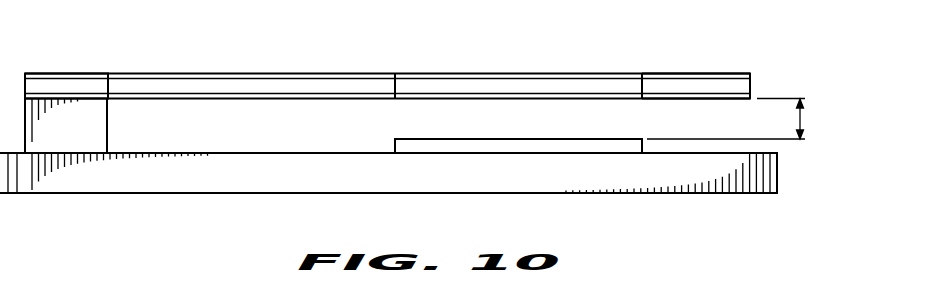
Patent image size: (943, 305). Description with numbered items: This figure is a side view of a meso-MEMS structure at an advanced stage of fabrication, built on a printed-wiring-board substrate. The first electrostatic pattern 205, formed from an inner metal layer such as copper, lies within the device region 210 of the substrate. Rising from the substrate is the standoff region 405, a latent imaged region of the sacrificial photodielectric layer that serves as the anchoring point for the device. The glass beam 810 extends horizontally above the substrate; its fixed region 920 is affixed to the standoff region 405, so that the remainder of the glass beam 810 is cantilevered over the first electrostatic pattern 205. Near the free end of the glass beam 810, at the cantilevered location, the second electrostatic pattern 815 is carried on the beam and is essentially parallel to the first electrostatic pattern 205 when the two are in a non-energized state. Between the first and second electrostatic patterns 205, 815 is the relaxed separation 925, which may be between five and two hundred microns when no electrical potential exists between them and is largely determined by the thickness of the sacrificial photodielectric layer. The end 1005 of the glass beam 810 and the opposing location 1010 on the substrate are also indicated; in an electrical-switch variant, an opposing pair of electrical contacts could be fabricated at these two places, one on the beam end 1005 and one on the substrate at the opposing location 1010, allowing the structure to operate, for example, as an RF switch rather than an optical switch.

The device region 210 is at (777, 173).
The first electrostatic pattern 205 is at (519, 138).
The standoff region 405 is at (108, 127).
The glass beam 810 is at (236, 68).
The second electrostatic pattern 815 is at (389, 128).
The fixed region 920 is at (108, 57).
The relaxed separation 925 is at (805, 117).
The end of the glass beam 1005 is at (733, 62).
The opposing location 1010 is at (700, 157).